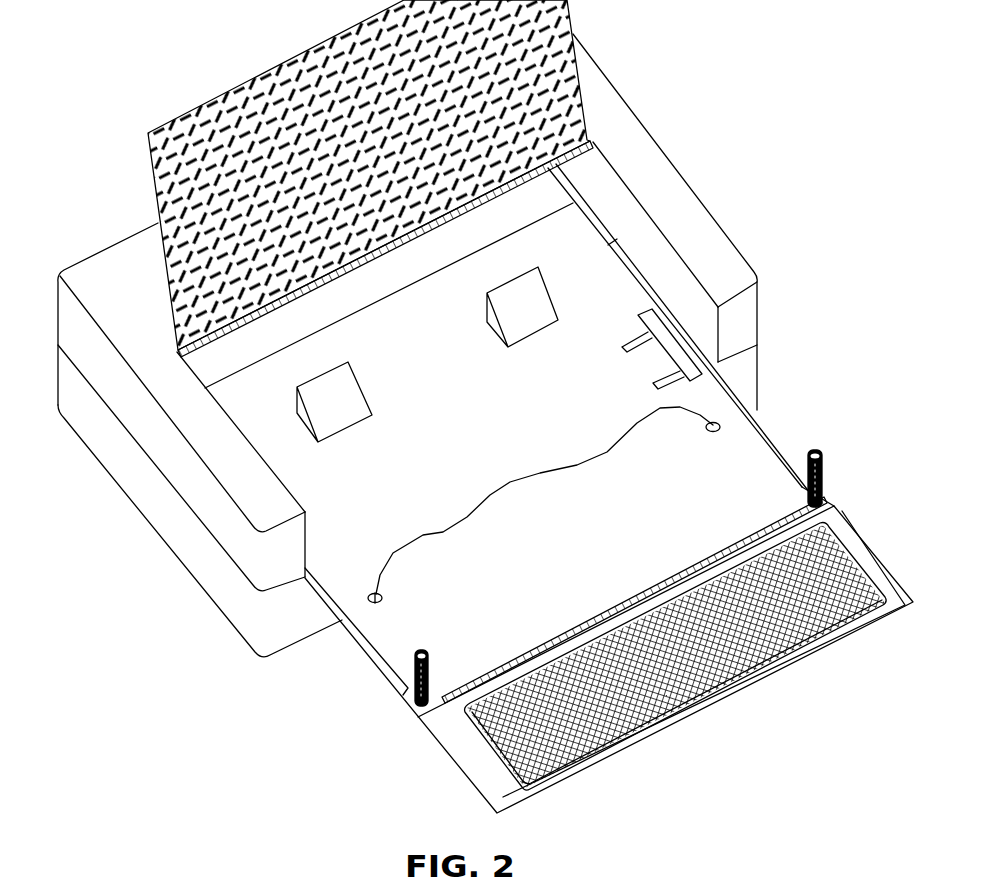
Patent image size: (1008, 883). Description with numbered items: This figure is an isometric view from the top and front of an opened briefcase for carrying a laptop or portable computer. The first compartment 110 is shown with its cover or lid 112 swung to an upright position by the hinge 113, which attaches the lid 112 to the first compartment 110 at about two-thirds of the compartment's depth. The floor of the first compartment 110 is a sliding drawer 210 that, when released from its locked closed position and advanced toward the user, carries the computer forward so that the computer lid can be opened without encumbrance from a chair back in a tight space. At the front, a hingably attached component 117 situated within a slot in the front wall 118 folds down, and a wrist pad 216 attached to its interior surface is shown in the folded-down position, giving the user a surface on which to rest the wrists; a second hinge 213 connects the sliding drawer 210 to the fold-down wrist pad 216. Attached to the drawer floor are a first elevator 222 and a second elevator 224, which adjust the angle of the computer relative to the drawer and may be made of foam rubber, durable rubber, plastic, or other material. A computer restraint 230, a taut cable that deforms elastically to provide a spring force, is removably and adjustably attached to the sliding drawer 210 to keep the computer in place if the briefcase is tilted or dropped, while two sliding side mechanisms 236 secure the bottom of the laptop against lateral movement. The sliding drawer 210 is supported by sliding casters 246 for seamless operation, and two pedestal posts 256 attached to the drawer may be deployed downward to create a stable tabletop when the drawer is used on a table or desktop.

The first compartment 110 is at (220, 530).
The lid 112 is at (288, 68).
The hinge 113 is at (578, 118).
The hingably attached component 117 is at (453, 757).
The front wall 118 is at (283, 557).
The sliding drawer 210 is at (732, 462).
The second hinge 213 is at (697, 567).
The wrist pad 216 is at (847, 567).
The first elevator 222 is at (348, 390).
The second elevator 224 is at (538, 294).
The computer restraint 230 is at (507, 482).
The sliding side mechanisms 236 is at (690, 353).
The sliding casters 246 is at (632, 262).
The pedestal posts 256 is at (824, 467).